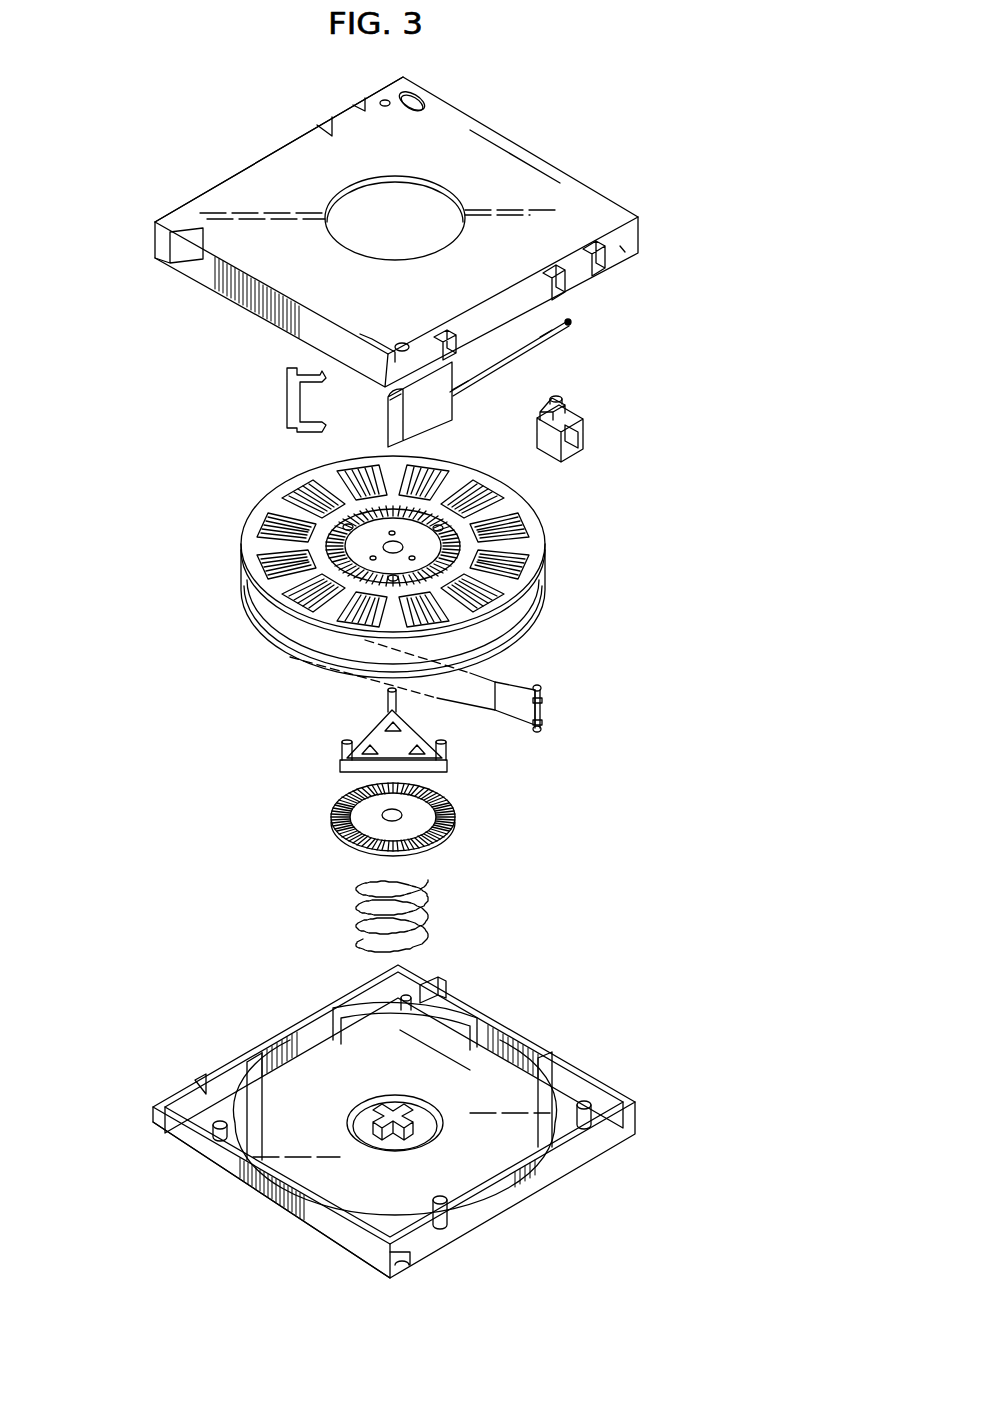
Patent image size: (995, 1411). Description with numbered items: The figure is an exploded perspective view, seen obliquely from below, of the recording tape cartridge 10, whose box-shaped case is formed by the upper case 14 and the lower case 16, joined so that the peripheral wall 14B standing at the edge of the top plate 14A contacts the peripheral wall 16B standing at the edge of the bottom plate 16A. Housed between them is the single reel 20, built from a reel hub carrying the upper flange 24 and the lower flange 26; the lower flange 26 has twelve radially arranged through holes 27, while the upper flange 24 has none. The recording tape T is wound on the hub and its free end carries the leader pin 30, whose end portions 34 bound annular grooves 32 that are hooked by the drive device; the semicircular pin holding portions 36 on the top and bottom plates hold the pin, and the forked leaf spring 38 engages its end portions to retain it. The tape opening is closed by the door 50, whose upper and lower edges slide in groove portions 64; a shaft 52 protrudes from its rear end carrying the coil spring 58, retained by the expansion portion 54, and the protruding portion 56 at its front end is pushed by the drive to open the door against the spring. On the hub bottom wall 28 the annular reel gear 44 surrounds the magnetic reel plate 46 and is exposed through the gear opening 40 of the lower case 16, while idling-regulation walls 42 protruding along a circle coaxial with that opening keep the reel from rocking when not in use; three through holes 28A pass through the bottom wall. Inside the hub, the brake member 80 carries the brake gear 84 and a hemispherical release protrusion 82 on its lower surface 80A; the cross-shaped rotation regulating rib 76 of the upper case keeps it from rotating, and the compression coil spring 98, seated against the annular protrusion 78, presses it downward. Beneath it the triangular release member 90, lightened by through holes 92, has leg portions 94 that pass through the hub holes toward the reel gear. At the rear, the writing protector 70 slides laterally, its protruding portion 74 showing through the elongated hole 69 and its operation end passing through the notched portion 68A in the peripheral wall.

The recording tape cartridge 10 is at (618, 152).
The upper case 14 is at (445, 1106).
The top plate 14A is at (500, 1075).
The peripheral wall 14B is at (225, 1168).
The lower case 16 is at (408, 232).
The bottom plate 16A is at (510, 167).
The peripheral wall 16B is at (155, 240).
The reel 20 is at (397, 550).
The upper flange 24 is at (543, 610).
The lower flange 26 is at (510, 508).
The through holes 27 is at (262, 566).
The bottom wall 28 is at (398, 548).
The through holes 28A is at (337, 528).
The leader pin 30 is at (566, 707).
The annular groove 32 is at (543, 723).
The end portions 34 is at (537, 684).
The pin holding portions 36 is at (410, 343).
The leaf spring 38 is at (290, 395).
The gear opening 40 is at (432, 183).
The idling-regulation walls 42 is at (370, 1020).
The reel gear 44 is at (462, 538).
The reel plate 46 is at (330, 550).
The door 50 is at (386, 410).
The shaft 52 is at (541, 351).
The expansion portion 54 is at (570, 323).
The protruding portion 56 is at (390, 440).
The coil spring 58 is at (552, 333).
The groove portions 64 is at (455, 1232).
The notched portion 68A is at (428, 982).
The elongated hole 69 is at (425, 103).
The writing protector 70 is at (592, 417).
The protruding portion 74 is at (562, 408).
The rotation regulating rib 76 is at (410, 1108).
The annular protrusion 78 is at (380, 1150).
The brake member 80 is at (405, 821).
The lower surface 80A is at (430, 810).
The release protrusion 82 is at (385, 825).
The brake gear 84 is at (337, 806).
The release member 90 is at (368, 728).
The through holes 92 is at (417, 747).
The leg portions 94 is at (340, 755).
The compression coil spring 98 is at (428, 890).
The recording tape T is at (514, 712).